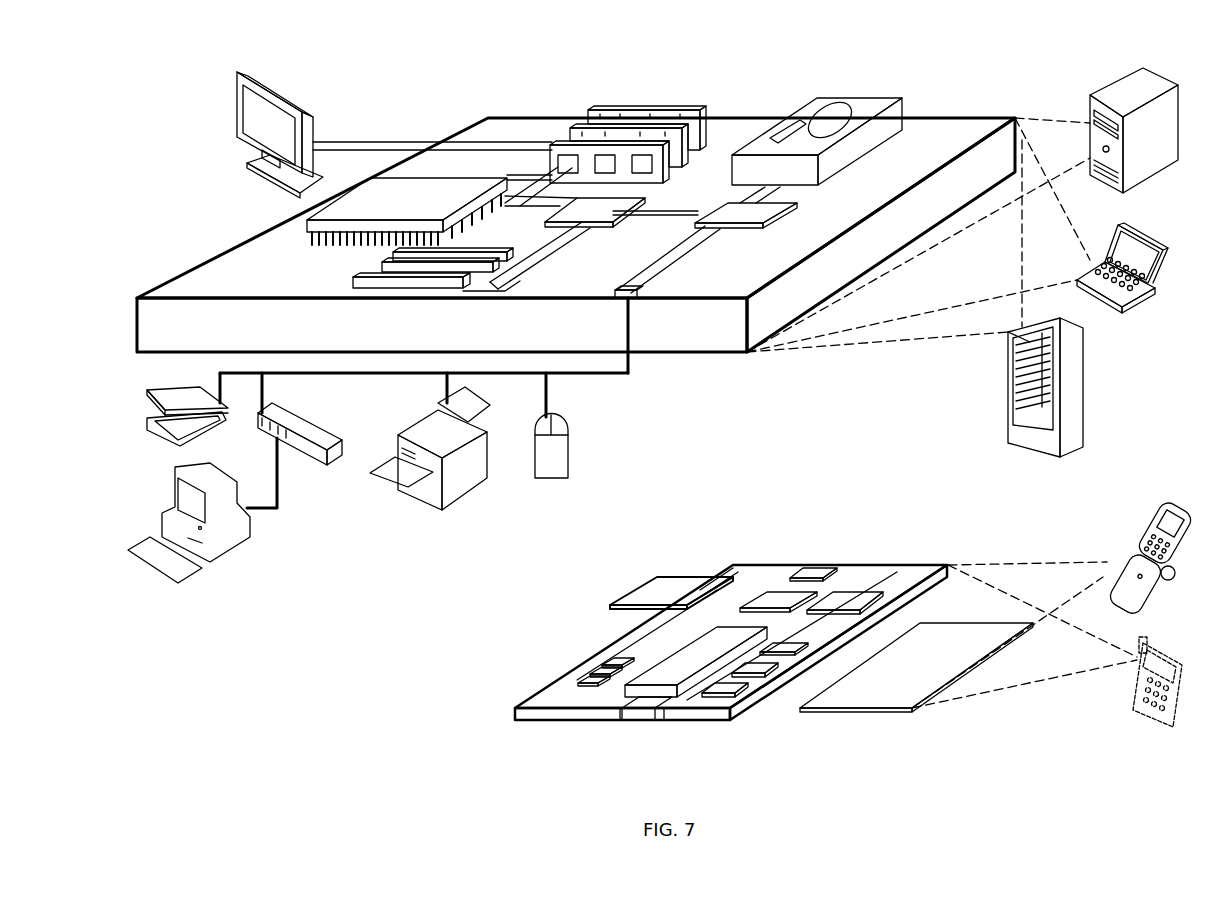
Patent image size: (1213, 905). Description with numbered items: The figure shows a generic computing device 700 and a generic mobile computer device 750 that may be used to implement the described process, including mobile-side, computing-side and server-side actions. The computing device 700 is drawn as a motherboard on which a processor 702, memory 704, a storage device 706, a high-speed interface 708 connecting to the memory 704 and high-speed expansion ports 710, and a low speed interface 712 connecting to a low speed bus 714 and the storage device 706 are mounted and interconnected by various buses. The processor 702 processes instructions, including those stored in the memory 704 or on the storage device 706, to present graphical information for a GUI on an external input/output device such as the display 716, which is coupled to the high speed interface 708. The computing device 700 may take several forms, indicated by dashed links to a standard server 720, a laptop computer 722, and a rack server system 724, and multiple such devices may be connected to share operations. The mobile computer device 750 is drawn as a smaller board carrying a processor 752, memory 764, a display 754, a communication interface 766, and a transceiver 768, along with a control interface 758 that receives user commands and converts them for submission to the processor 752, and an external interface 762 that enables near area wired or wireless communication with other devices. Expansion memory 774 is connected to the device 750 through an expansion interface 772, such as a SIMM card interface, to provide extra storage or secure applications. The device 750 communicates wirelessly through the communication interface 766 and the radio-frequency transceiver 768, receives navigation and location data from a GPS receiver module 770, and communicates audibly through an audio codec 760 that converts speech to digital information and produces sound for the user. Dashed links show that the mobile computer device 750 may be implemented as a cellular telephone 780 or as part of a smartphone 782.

The computing device 700 is at (422, 92).
The processor 702 is at (307, 227).
The memory 704 is at (600, 112).
The storage device 706 is at (812, 105).
The high-speed interface 708 is at (573, 208).
The high-speed expansion ports 710 is at (368, 268).
The low speed interface 712 is at (745, 213).
The low speed bus 714 is at (640, 296).
The display 716 is at (238, 78).
The standard server 720 is at (1090, 100).
The laptop computer 722 is at (1113, 228).
The rack server system 724 is at (1008, 406).
The mobile computer device 750 is at (712, 540).
The processor 752 is at (667, 690).
The display 754 is at (920, 712).
The control interface 758 is at (780, 667).
The audio codec 760 is at (783, 652).
The external interface 762 is at (640, 713).
The memory 764 is at (593, 673).
The communication interface 766 is at (777, 597).
The transceiver 768 is at (845, 598).
The GPS receiver module 770 is at (812, 572).
The expansion interface 772 is at (710, 577).
The expansion memory 774 is at (648, 577).
The cellular telephone 780 is at (1163, 512).
The smartphone 782 is at (1143, 637).